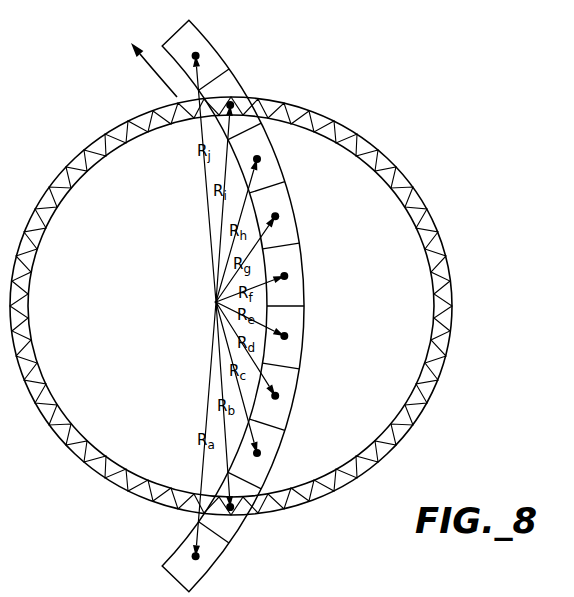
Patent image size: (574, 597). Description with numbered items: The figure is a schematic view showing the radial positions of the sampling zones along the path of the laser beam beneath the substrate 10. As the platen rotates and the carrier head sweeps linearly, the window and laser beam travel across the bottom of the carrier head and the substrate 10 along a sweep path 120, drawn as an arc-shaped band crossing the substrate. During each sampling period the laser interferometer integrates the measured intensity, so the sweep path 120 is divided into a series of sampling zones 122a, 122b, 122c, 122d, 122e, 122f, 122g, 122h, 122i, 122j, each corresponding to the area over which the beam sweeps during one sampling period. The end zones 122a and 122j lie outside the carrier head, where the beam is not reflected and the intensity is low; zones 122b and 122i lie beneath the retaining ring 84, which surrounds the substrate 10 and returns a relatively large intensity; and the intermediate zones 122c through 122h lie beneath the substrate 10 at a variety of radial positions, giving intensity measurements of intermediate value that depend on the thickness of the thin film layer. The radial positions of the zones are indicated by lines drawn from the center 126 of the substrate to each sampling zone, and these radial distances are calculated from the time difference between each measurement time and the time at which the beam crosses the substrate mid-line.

The substrate 10 is at (407, 250).
The retaining ring 84 is at (452, 278).
The sweep path 120 is at (163, 26).
The sampling zone 122a is at (210, 574).
The sampling zone 122b is at (242, 536).
The sampling zone 122c is at (280, 460).
The sampling zone 122d is at (298, 395).
The sampling zone 122e is at (305, 334).
The sampling zone 122f is at (305, 278).
The sampling zone 122g is at (300, 216).
The sampling zone 122h is at (281, 160).
The sampling zone 122i is at (243, 82).
The sampling zone 122j is at (213, 43).
The center of the substrate 126 is at (215, 301).